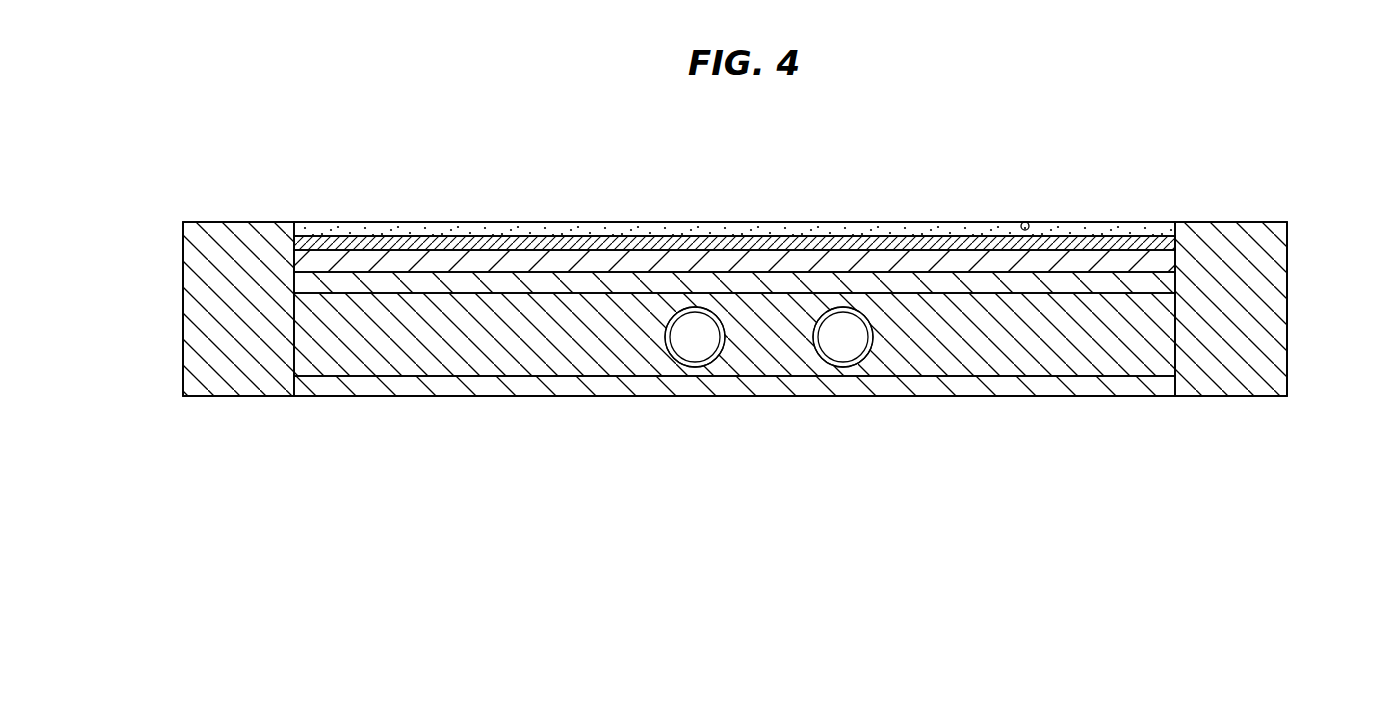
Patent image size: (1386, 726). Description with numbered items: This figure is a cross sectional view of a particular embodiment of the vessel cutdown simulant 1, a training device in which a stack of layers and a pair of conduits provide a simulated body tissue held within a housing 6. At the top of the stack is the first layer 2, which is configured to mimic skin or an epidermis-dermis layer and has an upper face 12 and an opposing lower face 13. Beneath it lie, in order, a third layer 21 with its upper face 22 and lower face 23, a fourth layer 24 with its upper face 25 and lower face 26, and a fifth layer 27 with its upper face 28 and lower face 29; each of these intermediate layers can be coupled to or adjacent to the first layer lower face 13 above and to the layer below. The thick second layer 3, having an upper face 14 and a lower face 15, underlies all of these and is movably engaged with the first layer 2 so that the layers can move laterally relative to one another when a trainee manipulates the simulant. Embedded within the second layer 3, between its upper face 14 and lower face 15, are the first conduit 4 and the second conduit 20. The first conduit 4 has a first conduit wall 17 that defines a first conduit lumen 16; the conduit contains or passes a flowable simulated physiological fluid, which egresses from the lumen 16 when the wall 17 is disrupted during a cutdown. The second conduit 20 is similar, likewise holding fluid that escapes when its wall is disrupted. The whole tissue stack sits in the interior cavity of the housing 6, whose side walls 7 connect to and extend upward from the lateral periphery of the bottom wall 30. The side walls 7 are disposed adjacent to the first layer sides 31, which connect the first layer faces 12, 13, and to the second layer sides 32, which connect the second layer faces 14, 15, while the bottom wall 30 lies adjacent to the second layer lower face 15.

The vessel cutdown simulant 1 is at (1000, 110).
The first layer 2 is at (1065, 230).
The second layer 3 is at (1077, 368).
The first conduit 4 is at (877, 306).
The housing 6 is at (228, 322).
The side wall 7 is at (183, 337).
The first layer upper face 12 is at (1021, 224).
The first layer lower face 13 is at (846, 230).
The second layer upper face 14 is at (980, 296).
The second layer lower face 15 is at (1110, 368).
The first conduit lumen 16 is at (718, 358).
The first conduit wall 17 is at (702, 345).
The second conduit 20 is at (723, 306).
The third layer 21 is at (720, 242).
The third layer upper face 22 is at (692, 240).
The third layer lower face 23 is at (607, 246).
The fourth layer 24 is at (527, 263).
The fourth layer upper face 25 is at (490, 260).
The fourth layer lower face 26 is at (399, 270).
The fifth layer 27 is at (543, 287).
The fifth layer upper face 28 is at (465, 272).
The fifth layer lower face 29 is at (405, 290).
The bottom wall 30 is at (585, 397).
The first layer sides 31 is at (294, 222).
The second layer sides 32 is at (294, 338).